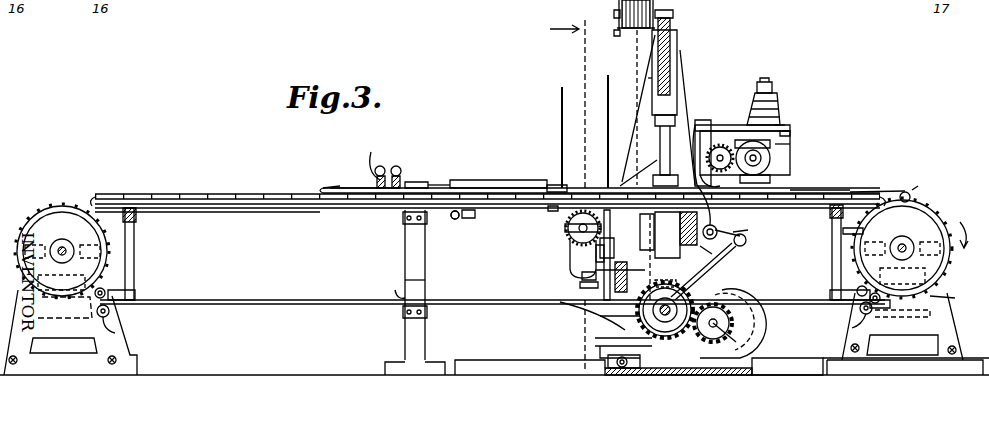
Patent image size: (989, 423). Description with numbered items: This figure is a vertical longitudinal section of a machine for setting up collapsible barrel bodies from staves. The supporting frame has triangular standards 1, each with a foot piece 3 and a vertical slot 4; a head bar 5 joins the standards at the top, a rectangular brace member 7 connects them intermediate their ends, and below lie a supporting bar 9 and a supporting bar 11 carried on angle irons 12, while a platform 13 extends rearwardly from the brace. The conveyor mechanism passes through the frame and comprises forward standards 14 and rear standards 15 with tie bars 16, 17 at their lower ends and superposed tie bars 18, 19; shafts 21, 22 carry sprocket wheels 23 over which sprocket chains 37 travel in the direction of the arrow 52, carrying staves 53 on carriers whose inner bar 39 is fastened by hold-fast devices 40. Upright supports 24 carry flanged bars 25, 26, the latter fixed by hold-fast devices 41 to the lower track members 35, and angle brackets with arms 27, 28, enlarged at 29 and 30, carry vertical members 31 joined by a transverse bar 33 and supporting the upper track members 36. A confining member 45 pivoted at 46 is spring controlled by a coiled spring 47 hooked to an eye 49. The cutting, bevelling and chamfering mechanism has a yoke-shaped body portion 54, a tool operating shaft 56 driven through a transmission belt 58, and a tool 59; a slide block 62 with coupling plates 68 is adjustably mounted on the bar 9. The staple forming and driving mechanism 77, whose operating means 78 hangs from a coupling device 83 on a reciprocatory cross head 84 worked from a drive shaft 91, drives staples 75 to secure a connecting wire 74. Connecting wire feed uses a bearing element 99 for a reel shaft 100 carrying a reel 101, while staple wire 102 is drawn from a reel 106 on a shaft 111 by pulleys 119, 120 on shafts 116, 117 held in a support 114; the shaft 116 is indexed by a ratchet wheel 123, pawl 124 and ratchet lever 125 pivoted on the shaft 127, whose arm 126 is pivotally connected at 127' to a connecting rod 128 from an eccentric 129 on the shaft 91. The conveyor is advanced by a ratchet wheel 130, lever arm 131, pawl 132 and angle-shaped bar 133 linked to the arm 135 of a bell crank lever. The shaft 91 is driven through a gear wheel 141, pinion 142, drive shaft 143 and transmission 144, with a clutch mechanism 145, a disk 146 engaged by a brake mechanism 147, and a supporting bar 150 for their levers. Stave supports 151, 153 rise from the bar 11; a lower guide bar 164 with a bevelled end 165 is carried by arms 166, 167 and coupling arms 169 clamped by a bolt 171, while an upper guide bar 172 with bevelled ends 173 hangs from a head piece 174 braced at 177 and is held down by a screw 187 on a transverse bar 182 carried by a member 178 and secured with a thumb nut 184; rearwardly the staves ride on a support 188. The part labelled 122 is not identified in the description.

The standard 1 is at (688, 76).
The foot piece 3 is at (756, 371).
The vertically disposed slot 4 is at (570, 194).
The head bar 5 is at (678, 36).
The rectangular brace member 7 is at (707, 122).
The rectangular supporting bar 9 is at (630, 272).
The supporting bar 11 is at (687, 230).
The angle irons 12 is at (667, 234).
The platform 13 is at (790, 128).
The forward standards 14 is at (127, 346).
The rear standards 15 is at (905, 334).
The tie bars 16 is at (18, 362).
The tie bars 17 is at (860, 348).
The tie bar 18 is at (106, 292).
The tie bar 19 is at (110, 313).
The shaft 21 is at (68, 249).
The shaft 22 is at (902, 263).
The sprocket wheels 23 is at (956, 278).
The upright supports 24 is at (405, 262).
The flanged bar 25 is at (407, 224).
The flanged bar 26 is at (405, 286).
The arm 27 is at (136, 290).
The arm 28 is at (884, 308).
The enlargement 29 is at (859, 287).
The enlarged end 30 is at (114, 331).
The vertically extending member 31 is at (135, 247).
The transversely extending bar 33 is at (137, 216).
The lower track members 35 is at (268, 298).
The upper track members 36 is at (282, 209).
The sprocket chain 37 is at (92, 203).
The bar 39 is at (112, 196).
The hold-fast devices 40 is at (404, 312).
The hold-fast devices 41 is at (412, 290).
The confining member 45 is at (507, 186).
The pivotal connection 46 is at (540, 216).
The coiled spring 47 is at (467, 219).
The eye 49 is at (453, 219).
The arrow 52 is at (911, 248).
The staves 53 is at (248, 195).
The yoke-shaped body portion 54 is at (580, 258).
The tool operating shaft 56 is at (570, 250).
The transmission belt 58 is at (563, 142).
The tool 59 is at (566, 230).
The slide block 62 is at (582, 276).
The coupling plates 68 is at (582, 286).
The connecting wire 74 is at (915, 189).
The staples 75 is at (637, 55).
The combined staple forming and driving mechanism 77 is at (652, 97).
The operating means 78 is at (660, 118).
The coupling device 83 is at (652, 78).
The reciprocatory cross head 84 is at (678, 60).
The drive shaft 91 is at (665, 310).
The bearing element 99 is at (653, 12).
The reel shaft 100 is at (618, 16).
The reel 101 is at (624, 31).
The wire 102 is at (748, 138).
The reel 106 is at (782, 124).
The shaft 111 is at (766, 80).
The support 114 is at (790, 134).
The shaft 116 is at (757, 184).
The shaft 117 is at (788, 147).
The double grooved pulley 119 is at (653, 166).
The double grooved pulley 120 is at (771, 159).
The arm 122 is at (717, 184).
The ratchet wheel 123 is at (721, 145).
The spring controlled pawl 124 is at (718, 138).
The ratchet lever 125 is at (718, 230).
The angularly disposed arm 126 is at (749, 237).
The shaft 127 is at (696, 254).
The pivotal connection 127' is at (762, 245).
The connecting rod 128 is at (718, 262).
The eccentric 129 is at (675, 281).
The ratchet wheel 130 is at (870, 234).
The lever arm 131 is at (910, 194).
The pawl 132 is at (903, 244).
The angle-shaped bar 133 is at (888, 190).
The arm 135 is at (723, 233).
The gear wheel 141 is at (640, 340).
The pinion 142 is at (735, 322).
The drive shaft 143 is at (742, 340).
The transmission 144 is at (946, 300).
The clutch mechanism 145 is at (600, 316).
The disk 146 is at (640, 330).
The brake mechanism 147 is at (604, 345).
The supporting bar 150 is at (616, 362).
The intermediate support 151 is at (652, 257).
The outer support 153 is at (650, 232).
The bar 164 is at (338, 210).
The bevelled forward end 165 is at (313, 193).
The vertical arm 166 is at (612, 248).
The inclined arm 167 is at (621, 254).
The coupling arm 169 is at (614, 274).
The bolt 171 is at (578, 313).
The combined guide and holding bar 172 is at (457, 180).
The bevelled end 173 is at (338, 188).
The head piece 174 is at (700, 125).
The brace member 177 is at (662, 149).
The supporting member 178 is at (430, 183).
The transverse bar 182 is at (412, 181).
The thumb nut 184 is at (400, 168).
The adjustable holding-down screw 187 is at (365, 162).
The support 188 is at (820, 192).